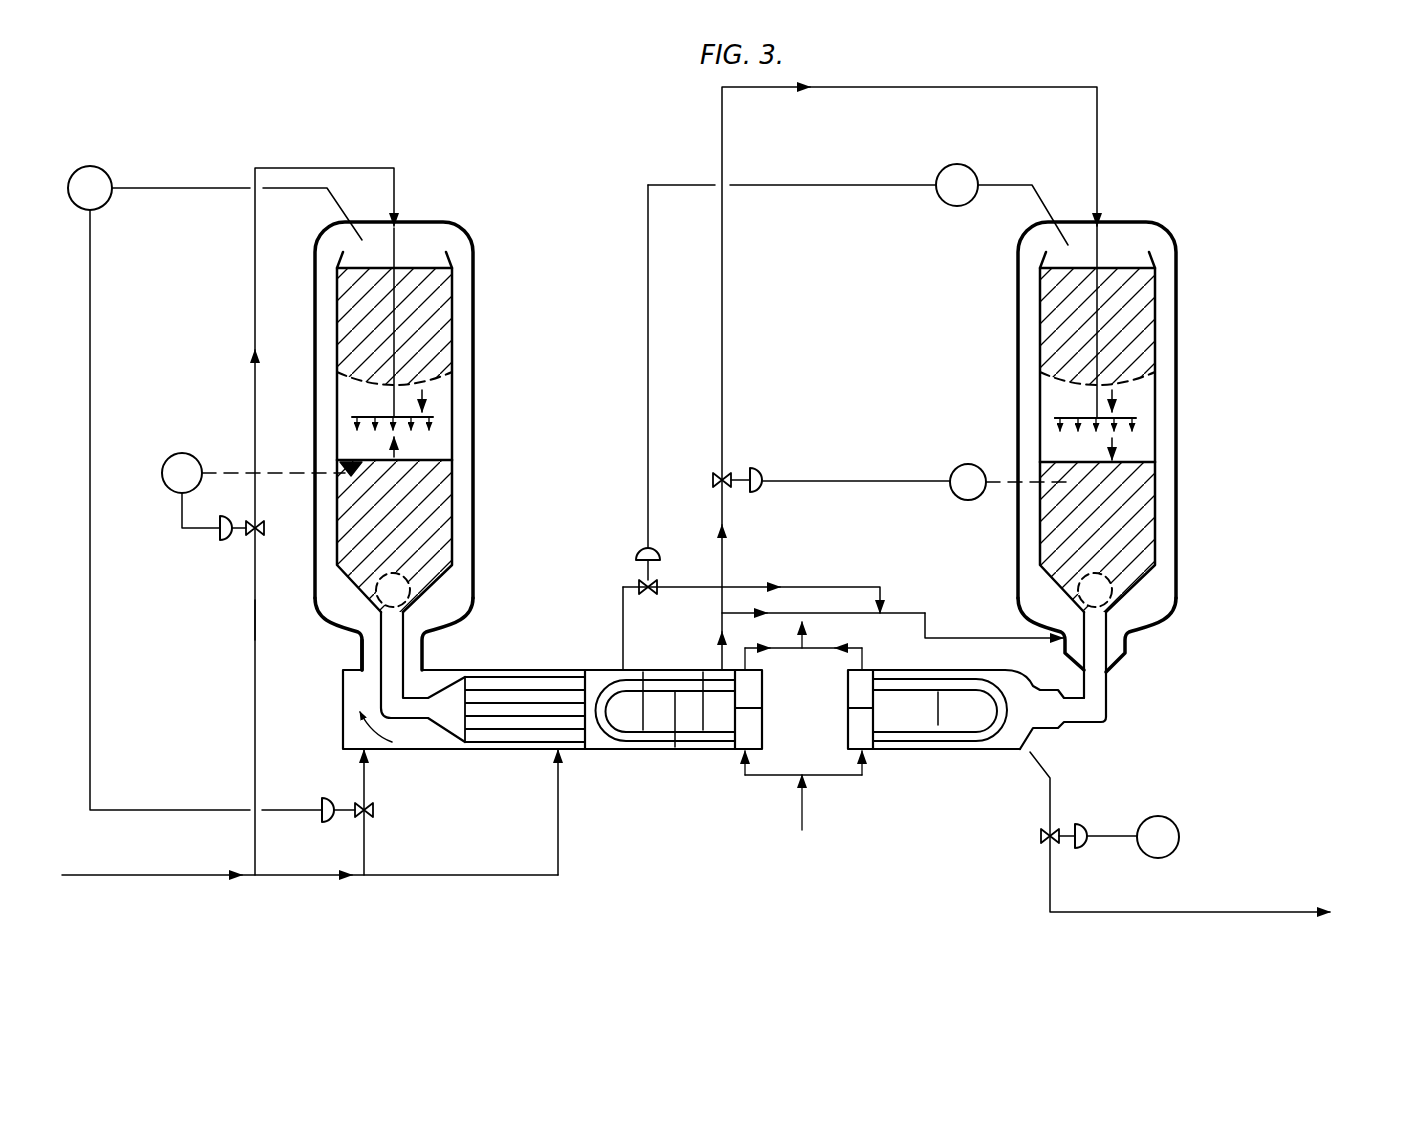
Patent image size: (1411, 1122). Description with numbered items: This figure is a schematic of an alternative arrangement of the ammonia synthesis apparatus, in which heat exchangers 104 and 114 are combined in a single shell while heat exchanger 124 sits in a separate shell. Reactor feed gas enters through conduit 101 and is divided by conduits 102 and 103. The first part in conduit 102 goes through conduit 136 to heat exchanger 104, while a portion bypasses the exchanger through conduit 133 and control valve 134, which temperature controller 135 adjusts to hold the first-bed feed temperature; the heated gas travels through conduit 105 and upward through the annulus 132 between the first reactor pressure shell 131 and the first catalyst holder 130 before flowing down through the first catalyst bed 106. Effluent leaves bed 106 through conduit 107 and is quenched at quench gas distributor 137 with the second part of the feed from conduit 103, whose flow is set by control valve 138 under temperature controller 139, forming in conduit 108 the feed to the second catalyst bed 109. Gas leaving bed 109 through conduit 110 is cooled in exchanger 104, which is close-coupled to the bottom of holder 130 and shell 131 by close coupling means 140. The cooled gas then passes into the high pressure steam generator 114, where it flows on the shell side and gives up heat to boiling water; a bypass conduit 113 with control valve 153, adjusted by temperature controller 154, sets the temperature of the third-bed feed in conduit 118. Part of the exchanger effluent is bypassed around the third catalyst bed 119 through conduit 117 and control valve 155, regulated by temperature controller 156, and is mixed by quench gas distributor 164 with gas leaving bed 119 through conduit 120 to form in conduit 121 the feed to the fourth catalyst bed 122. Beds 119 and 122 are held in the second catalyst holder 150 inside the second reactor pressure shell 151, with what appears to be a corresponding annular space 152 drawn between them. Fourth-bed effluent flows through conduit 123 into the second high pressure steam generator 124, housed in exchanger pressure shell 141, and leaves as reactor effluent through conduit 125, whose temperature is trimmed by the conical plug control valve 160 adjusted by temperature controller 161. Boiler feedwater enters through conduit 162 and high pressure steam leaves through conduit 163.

The conduit 101 is at (145, 875).
The conduit 102 is at (270, 876).
The conduit 103 is at (250, 712).
The heat exchanger 104 is at (505, 670).
The conduit 105 is at (345, 742).
The first catalyst bed 106 is at (446, 285).
The conduit 107 is at (426, 404).
The conduit 108 is at (396, 452).
The second catalyst bed 109 is at (430, 540).
The conduit 110 is at (403, 645).
The conduit 113 is at (855, 612).
The high pressure steam generator 114 is at (683, 745).
The conduit 117 is at (722, 557).
The conduit 118 is at (945, 637).
The third catalyst bed 119 is at (1140, 297).
The conduit 120 is at (1116, 404).
The conduit 121 is at (1118, 450).
The fourth catalyst bed 122 is at (1140, 530).
The conduit 123 is at (1107, 690).
The second high pressure steam generator 124 is at (925, 751).
The conduit 125 is at (1210, 912).
The first catalyst holder 130 is at (452, 320).
The first reactor pressure shell 131 is at (473, 350).
The annulus 132 is at (456, 492).
The conduit 133 is at (366, 848).
The control valve 134 is at (368, 812).
The temperature controller 135 is at (108, 205).
The conduit 136 is at (540, 876).
The quench gas distributor 137 is at (433, 420).
The control valve 138 is at (255, 536).
The temperature controller 139 is at (182, 453).
The close coupling means 140 is at (360, 652).
The exchanger pressure shell 141 is at (988, 751).
The second catalyst holder 150 is at (1156, 345).
The second reactor pressure shell 151 is at (1160, 425).
The second reaction zone of second reactor 152 is at (1160, 475).
The control valve 153 is at (655, 583).
The temperature controller 154 is at (950, 207).
The control valve 155 is at (724, 490).
The temperature controller 156 is at (960, 500).
The conical plug 160 is at (1043, 842).
The temperature controller 161 is at (1174, 823).
The conduit 162 is at (804, 812).
The conduit 163 is at (808, 632).
The quench gas distributor 164 is at (1052, 413).